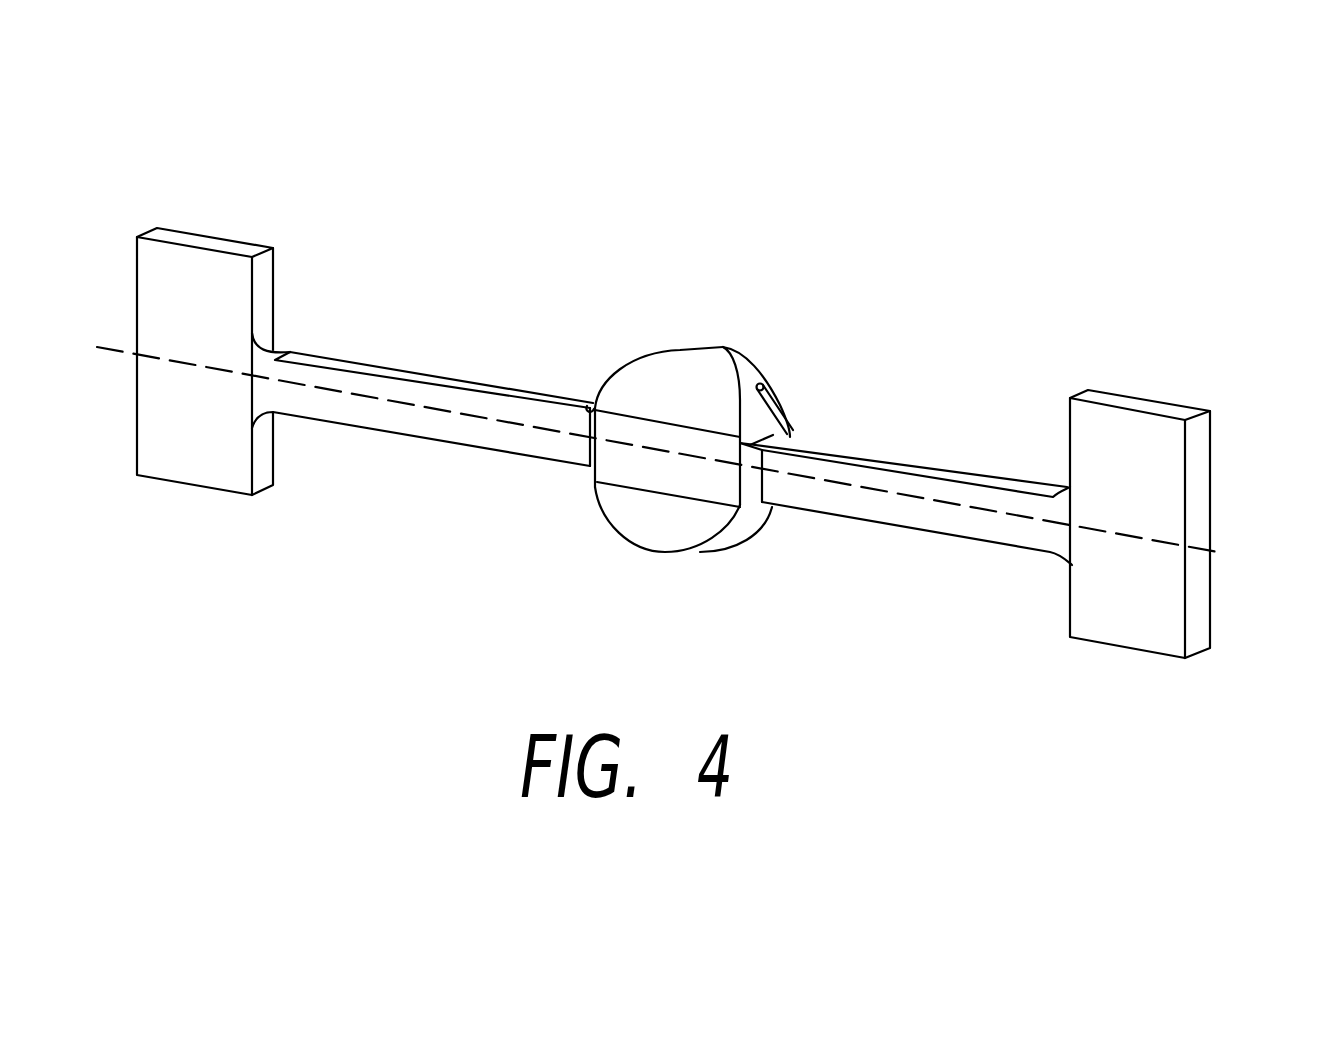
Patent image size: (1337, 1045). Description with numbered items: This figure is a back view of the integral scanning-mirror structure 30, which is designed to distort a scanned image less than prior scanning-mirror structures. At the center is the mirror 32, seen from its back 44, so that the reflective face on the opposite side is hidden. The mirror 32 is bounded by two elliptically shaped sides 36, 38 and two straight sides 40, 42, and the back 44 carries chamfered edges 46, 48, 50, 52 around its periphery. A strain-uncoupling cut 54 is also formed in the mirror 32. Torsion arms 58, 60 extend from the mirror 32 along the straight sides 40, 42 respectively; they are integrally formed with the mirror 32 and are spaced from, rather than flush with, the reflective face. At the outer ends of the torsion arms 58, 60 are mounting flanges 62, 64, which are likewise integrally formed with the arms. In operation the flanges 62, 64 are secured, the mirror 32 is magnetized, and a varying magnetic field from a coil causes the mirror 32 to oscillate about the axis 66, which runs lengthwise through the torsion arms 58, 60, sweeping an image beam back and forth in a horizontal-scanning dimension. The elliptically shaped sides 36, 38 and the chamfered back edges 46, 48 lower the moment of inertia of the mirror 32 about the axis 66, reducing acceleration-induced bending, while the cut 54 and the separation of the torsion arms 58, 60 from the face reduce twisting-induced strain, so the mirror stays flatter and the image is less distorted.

The scanning-mirror structure 30 is at (412, 538).
The mirror 32 is at (732, 255).
The elliptically shaped side 36 is at (728, 343).
The elliptically shaped side 38 is at (672, 562).
The straight side 40 is at (797, 433).
The straight side 42 is at (593, 407).
The back 44 is at (662, 478).
The chamfered edge 46 is at (593, 407).
The chamfered edge 48 is at (750, 488).
The chamfered edge 50 is at (640, 516).
The chamfered edge 52 is at (593, 467).
The strain-uncoupling cut 54 is at (767, 388).
The torsion arm 58 is at (903, 460).
The torsion arm 60 is at (470, 387).
The mounting flange 62 is at (1152, 400).
The mounting flange 64 is at (193, 243).
The axis 66 is at (1240, 553).